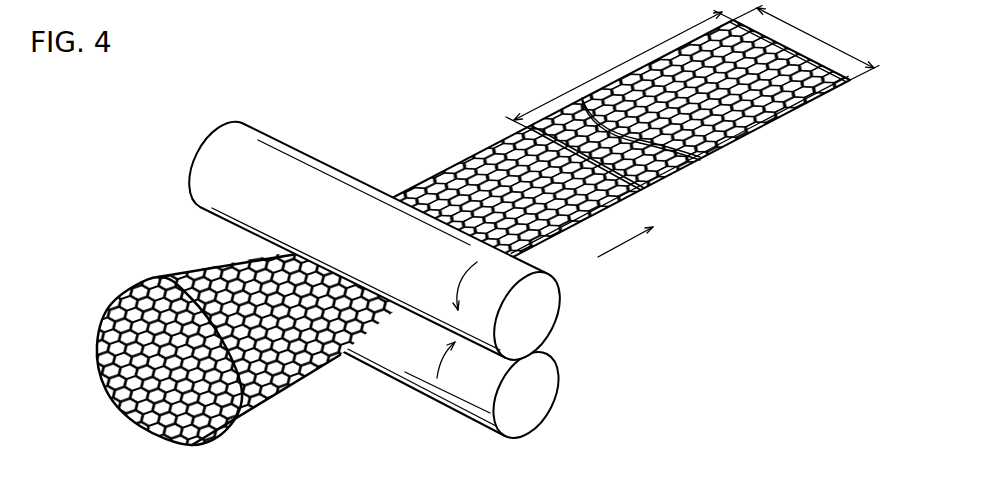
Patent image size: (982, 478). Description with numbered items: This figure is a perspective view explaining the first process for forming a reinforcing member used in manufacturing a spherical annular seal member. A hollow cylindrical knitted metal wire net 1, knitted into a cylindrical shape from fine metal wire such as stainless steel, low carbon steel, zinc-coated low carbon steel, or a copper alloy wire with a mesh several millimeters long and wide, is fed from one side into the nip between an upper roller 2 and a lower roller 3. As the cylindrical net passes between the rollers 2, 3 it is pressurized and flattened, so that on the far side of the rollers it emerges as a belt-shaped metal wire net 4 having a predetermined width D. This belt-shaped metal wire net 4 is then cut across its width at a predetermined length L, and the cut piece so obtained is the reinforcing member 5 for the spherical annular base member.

The hollow cylindrical knitted metal wire net 1 is at (158, 278).
The roller 2 is at (556, 296).
The roller 3 is at (552, 372).
The belt-shaped metal wire net 4 is at (458, 163).
The reinforcing member 5 is at (660, 182).
The predetermined length L is at (605, 73).
The predetermined width D is at (809, 35).